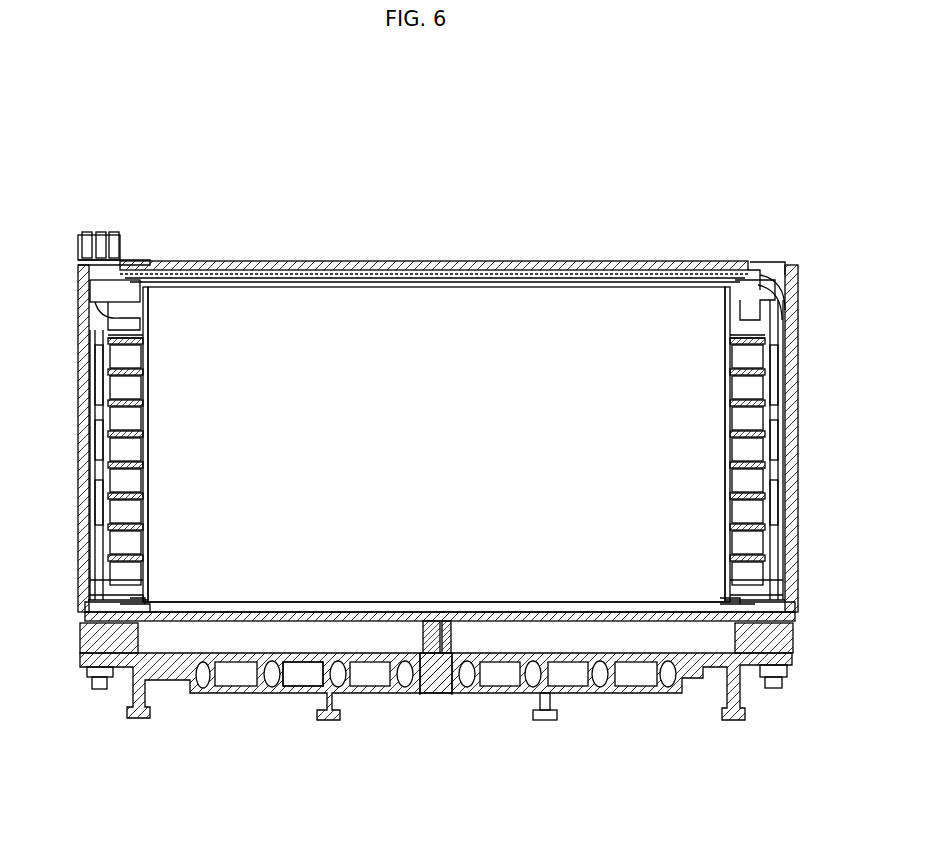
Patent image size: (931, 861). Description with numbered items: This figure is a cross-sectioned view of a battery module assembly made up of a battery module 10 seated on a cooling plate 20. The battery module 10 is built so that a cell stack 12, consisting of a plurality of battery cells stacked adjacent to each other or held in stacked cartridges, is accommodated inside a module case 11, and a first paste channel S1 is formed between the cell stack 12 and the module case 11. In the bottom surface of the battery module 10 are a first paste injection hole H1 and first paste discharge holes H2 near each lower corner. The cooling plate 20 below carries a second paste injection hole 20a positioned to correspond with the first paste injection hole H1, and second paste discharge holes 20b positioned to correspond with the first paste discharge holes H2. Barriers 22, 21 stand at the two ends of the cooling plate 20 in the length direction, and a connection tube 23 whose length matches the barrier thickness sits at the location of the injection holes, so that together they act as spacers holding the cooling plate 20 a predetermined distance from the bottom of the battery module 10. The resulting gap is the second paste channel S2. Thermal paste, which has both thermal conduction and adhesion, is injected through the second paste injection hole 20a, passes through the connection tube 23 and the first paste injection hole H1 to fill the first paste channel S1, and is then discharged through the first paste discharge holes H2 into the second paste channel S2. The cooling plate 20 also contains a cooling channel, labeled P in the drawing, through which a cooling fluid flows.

The battery module 10 is at (133, 185).
The module case 11 is at (195, 262).
The cell stack 12 is at (262, 325).
The first paste channel S1 is at (262, 605).
The first paste discharge hole H2 is at (150, 607).
The first paste injection hole H1 is at (436, 606).
The connection tube 23 is at (450, 640).
The barrier 22 is at (80, 640).
The barrier 21 is at (793, 640).
The cooling plate 20 is at (690, 680).
The second paste injection hole 20a is at (436, 695).
The second paste discharge hole 20b is at (421, 695).
The pocket P is at (205, 685).
The second paste channel S2 is at (285, 640).